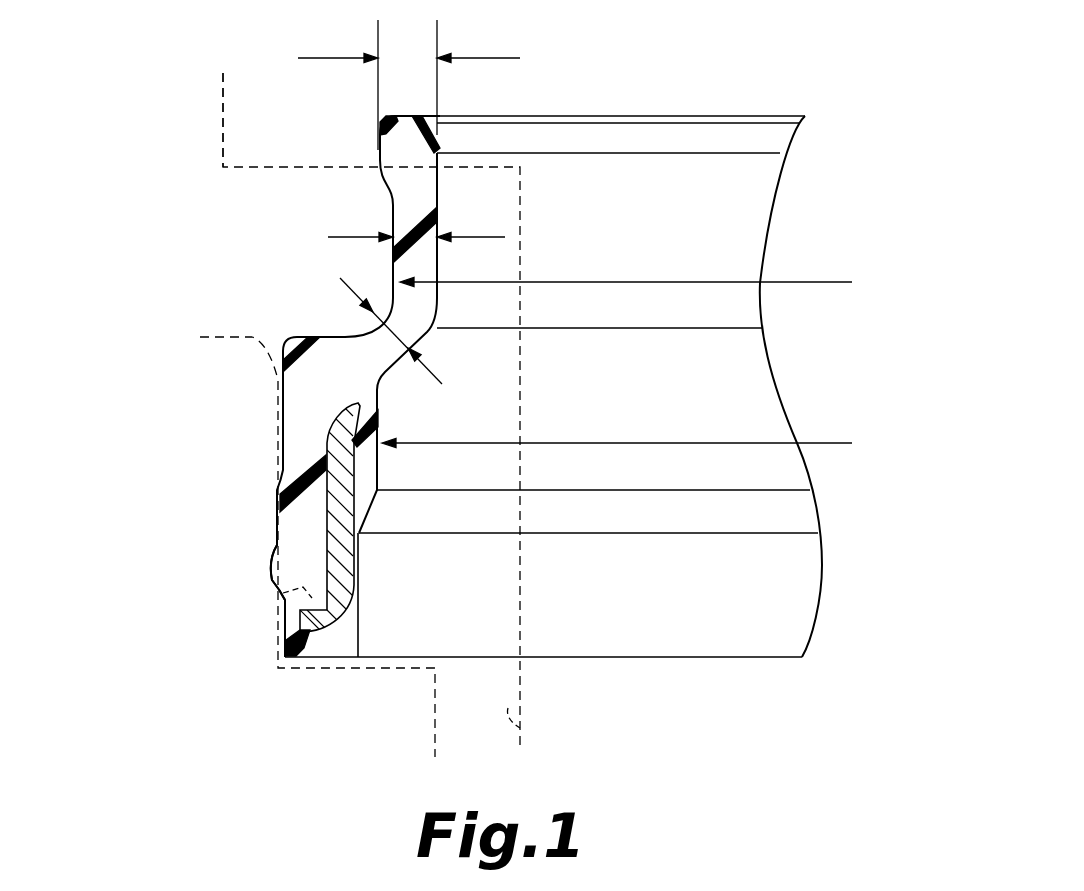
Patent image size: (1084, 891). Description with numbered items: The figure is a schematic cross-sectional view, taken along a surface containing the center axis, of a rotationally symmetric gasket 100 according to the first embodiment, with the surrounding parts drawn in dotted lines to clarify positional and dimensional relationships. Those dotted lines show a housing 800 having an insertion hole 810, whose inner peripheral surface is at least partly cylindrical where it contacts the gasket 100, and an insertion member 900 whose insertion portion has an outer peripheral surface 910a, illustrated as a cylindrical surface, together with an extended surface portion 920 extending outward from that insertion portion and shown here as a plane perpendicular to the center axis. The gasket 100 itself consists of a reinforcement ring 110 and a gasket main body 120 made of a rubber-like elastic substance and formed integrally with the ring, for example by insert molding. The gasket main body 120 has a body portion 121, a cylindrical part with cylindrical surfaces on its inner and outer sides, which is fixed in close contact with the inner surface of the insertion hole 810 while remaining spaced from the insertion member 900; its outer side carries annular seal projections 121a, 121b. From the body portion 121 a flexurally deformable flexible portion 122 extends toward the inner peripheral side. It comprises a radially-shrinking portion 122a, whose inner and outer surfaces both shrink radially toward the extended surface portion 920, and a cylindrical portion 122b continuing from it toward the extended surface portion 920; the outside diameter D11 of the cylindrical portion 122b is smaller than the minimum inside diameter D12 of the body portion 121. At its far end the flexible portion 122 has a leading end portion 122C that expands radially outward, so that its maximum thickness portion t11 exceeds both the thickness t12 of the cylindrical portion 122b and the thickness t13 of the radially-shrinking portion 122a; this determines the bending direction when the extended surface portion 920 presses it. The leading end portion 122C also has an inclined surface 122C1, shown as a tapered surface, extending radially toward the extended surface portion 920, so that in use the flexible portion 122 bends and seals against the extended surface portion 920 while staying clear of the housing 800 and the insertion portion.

The gasket 100 is at (468, 380).
The reinforcement ring 110 is at (343, 570).
The gasket main body 120 is at (303, 322).
The body portion 121 is at (430, 475).
The annular seal projection 121a is at (278, 493).
The annular seal projection 121b is at (272, 552).
The flexible portion 122 is at (487, 265).
The radially-shrinking portion 122a is at (407, 330).
The cylindrical portion 122b is at (390, 262).
The leading end portion 122C is at (383, 152).
The inclined surface 122C1 is at (422, 116).
The housing 800 is at (317, 547).
The insertion hole 810 is at (300, 598).
The insertion member 900 is at (456, 410).
The outer peripheral surface 910a is at (520, 728).
The extended surface portion 920 is at (240, 168).
The outside diameter D11 is at (666, 284).
The minimum inside diameter D12 is at (657, 445).
The maximum thickness portion t11 is at (413, 85).
The thickness of the cylindrical portion t12 is at (416, 222).
The thickness of the radially-shrinking portion t13 is at (366, 319).